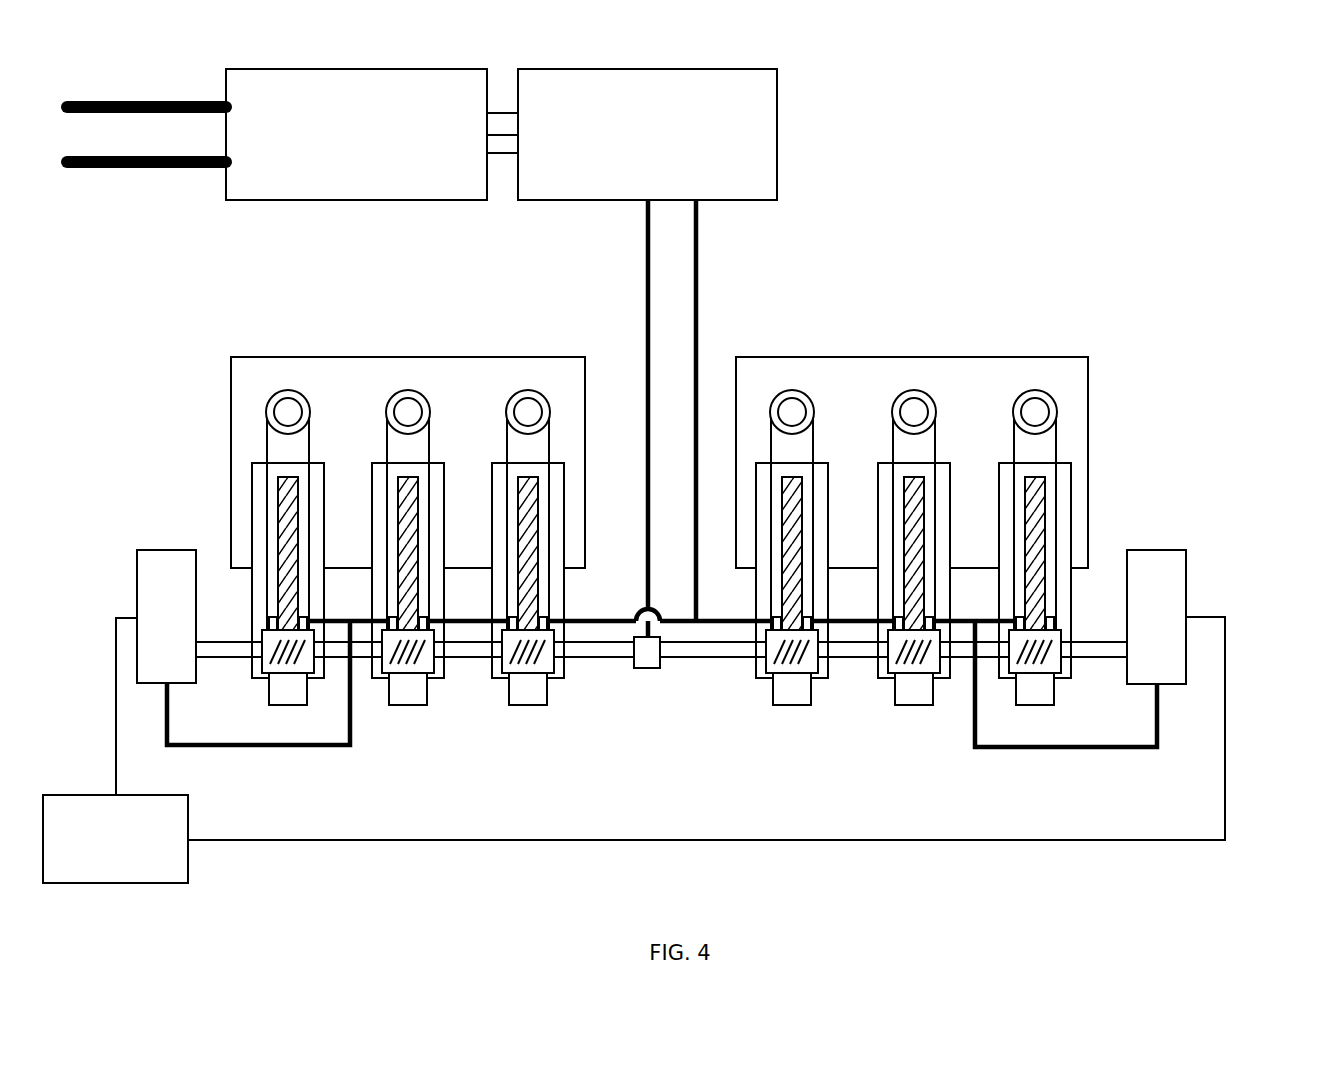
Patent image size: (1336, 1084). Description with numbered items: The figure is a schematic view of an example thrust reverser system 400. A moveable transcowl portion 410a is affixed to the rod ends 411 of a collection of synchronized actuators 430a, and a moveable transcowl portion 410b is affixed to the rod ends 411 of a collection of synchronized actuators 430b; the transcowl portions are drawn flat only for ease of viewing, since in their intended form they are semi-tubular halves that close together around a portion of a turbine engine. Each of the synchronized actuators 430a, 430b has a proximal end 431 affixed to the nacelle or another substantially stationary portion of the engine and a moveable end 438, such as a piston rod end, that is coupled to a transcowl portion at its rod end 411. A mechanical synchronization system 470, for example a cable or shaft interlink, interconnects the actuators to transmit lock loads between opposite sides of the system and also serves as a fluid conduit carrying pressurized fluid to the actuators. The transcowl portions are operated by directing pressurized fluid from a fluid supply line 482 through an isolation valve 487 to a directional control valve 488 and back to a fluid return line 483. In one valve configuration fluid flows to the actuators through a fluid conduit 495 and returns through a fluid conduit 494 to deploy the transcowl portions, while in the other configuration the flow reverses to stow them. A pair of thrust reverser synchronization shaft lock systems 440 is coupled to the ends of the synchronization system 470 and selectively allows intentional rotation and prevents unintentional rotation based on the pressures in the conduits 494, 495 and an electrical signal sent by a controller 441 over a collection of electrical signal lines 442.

The thrust reverser system 400 is at (1041, 98).
The fluid supply line 482 is at (127, 114).
The fluid return line 483 is at (155, 157).
The isolation valve 487 is at (338, 167).
The directional control valve 488 is at (629, 169).
The fluid conduit 494 is at (698, 288).
The fluid conduit 495 is at (646, 325).
The moveable transcowl portion 410a is at (578, 386).
The moveable transcowl portion 410b is at (788, 386).
The rod ends 411 is at (277, 394).
The moveable end 438 is at (270, 427).
The synchronized actuators 430a is at (252, 478).
The synchronized actuators 430b is at (829, 463).
The proximal end 431 is at (250, 687).
The mechanical synchronization system 470 is at (617, 659).
The thrust reverser synchronization shaft lock systems 440 is at (148, 587).
The controller 441 is at (97, 868).
The electrical signal lines 442 is at (116, 690).